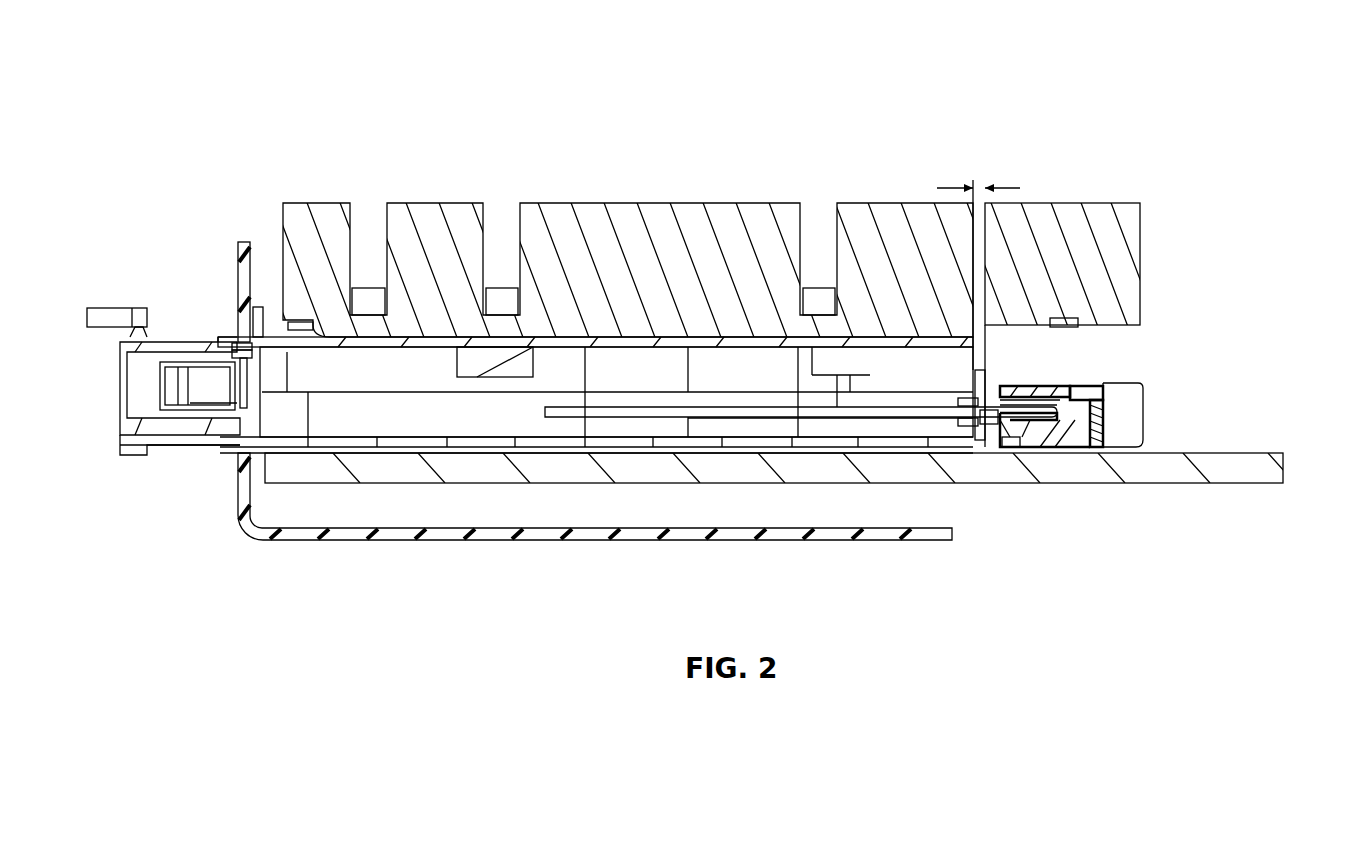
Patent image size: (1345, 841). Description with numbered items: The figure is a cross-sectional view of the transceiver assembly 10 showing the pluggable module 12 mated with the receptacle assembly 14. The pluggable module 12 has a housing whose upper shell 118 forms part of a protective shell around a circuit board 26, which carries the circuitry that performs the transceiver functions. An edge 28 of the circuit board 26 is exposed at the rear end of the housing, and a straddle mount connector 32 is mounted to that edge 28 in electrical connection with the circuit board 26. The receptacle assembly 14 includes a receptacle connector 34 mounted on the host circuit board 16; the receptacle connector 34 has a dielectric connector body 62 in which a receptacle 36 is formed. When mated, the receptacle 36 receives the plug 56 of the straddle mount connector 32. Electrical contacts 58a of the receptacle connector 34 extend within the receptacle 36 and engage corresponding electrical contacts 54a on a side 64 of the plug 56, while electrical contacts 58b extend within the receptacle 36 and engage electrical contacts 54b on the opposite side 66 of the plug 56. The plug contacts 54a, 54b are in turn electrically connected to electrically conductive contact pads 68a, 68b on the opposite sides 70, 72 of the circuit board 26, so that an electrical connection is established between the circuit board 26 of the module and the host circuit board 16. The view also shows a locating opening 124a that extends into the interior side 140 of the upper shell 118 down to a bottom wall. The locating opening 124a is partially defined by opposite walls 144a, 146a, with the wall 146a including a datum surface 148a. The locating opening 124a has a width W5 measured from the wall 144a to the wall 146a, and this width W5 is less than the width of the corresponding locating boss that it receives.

The transceiver assembly 10 is at (985, 70).
The pluggable module 12 is at (616, 366).
The receptacle assembly 14 is at (1068, 195).
The host circuit board 16 is at (1183, 455).
The circuit board 26 is at (812, 408).
The edge 28 is at (933, 428).
The straddle mount connector 32 is at (993, 437).
The receptacle connector 34 is at (1090, 385).
The receptacle 36 is at (1087, 442).
The electrical contacts 54a is at (1080, 390).
The electrical contacts 54b is at (1037, 447).
The plug 56 is at (1020, 442).
The electrical contacts 58a is at (1060, 395).
The electrical contacts 58b is at (1030, 447).
The dielectric connector body 62 is at (1100, 378).
The side 64 is at (1015, 395).
The side 66 is at (1007, 442).
The contact pads 68a is at (965, 400).
The contact pads 68b is at (968, 412).
The side 70 is at (886, 393).
The side 72 is at (878, 441).
The upper shell 118 is at (553, 345).
The locating opening 124a is at (975, 418).
The interior side 140 is at (960, 400).
The wall 144a is at (1013, 442).
The wall 146a is at (1000, 405).
The datum surface 148a is at (992, 400).
The width W5 is at (1003, 187).